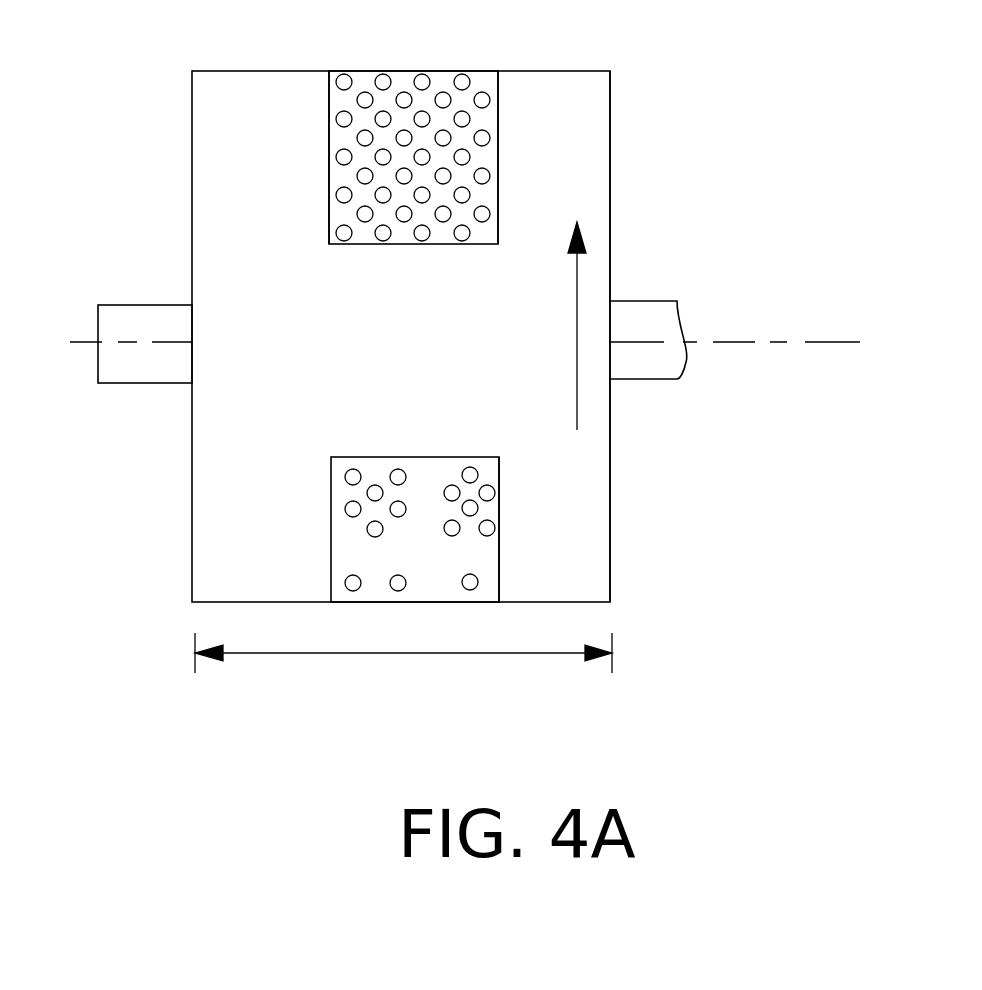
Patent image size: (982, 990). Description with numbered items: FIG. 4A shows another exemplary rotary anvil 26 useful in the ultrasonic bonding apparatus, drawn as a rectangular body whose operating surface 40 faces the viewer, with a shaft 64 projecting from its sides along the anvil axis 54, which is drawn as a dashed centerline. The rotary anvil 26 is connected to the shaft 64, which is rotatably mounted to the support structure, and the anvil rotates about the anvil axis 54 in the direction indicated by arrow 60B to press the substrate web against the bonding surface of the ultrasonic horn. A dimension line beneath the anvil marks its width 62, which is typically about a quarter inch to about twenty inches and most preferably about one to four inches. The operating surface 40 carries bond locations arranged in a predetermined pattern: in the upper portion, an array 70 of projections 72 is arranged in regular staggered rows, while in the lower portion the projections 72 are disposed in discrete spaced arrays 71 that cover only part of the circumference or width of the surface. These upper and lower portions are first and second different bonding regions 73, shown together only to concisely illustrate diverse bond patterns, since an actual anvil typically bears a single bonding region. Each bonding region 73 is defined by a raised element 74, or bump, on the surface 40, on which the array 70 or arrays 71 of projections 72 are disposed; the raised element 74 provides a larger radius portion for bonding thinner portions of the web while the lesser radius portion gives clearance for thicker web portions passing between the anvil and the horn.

The rotary anvil 26 is at (173, 517).
The operating surface 40 is at (587, 510).
The anvil axis 54 is at (818, 342).
The arrow 60B is at (577, 278).
The width 62 is at (415, 653).
The shaft 64 is at (648, 298).
The array of projections 70 is at (340, 193).
The discrete spaced arrays 71 is at (462, 580).
The projections 72 is at (489, 96).
The bonding regions 73 is at (520, 153).
The raised element 74 is at (313, 99).